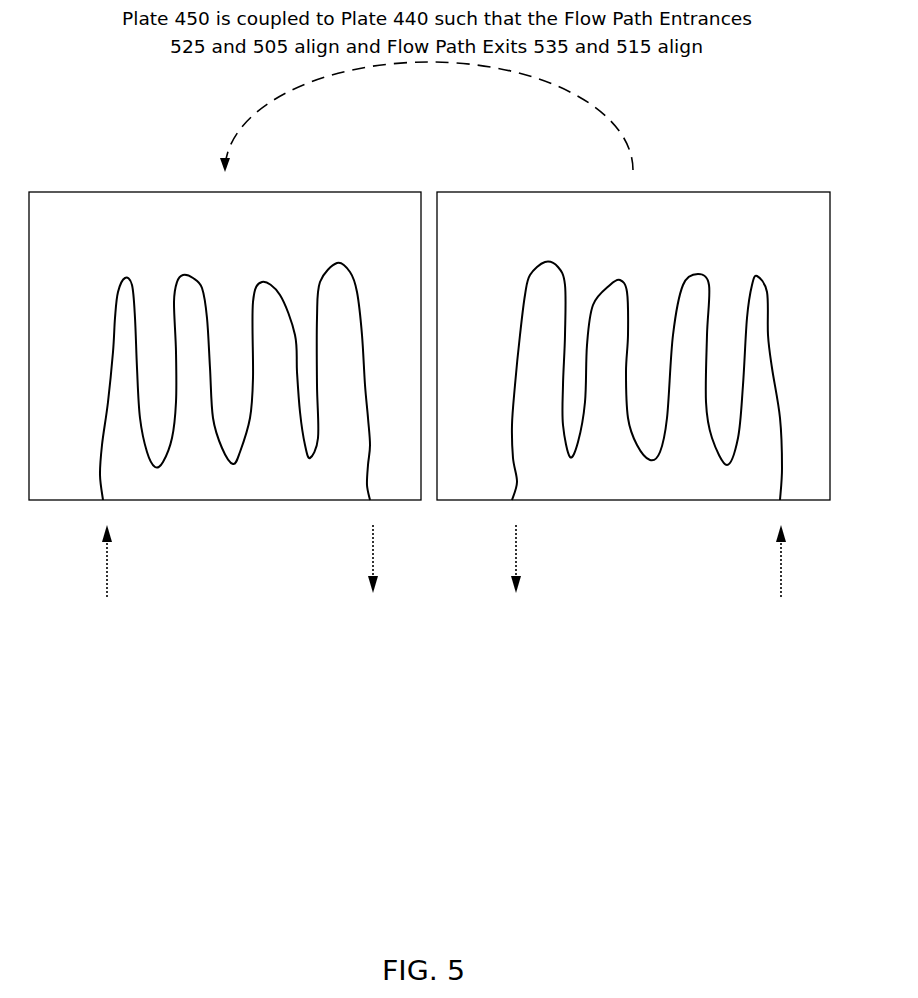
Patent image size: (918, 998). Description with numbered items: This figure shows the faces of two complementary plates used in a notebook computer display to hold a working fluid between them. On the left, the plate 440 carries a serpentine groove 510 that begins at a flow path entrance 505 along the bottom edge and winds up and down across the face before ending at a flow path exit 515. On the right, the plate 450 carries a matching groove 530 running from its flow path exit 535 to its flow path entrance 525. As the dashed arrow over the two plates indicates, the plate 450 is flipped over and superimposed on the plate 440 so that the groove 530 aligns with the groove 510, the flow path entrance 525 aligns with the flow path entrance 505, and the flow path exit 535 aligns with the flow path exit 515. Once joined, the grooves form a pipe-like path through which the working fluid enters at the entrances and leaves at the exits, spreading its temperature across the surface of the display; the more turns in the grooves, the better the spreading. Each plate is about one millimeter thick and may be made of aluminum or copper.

The plate 440 is at (225, 346).
The plate 450 is at (633, 346).
The groove 510 is at (200, 278).
The groove 530 is at (610, 277).
The flow path entrance 505 is at (107, 600).
The flow path exit 515 is at (371, 600).
The flow path exit 535 is at (516, 600).
The flow path entrance 525 is at (781, 600).